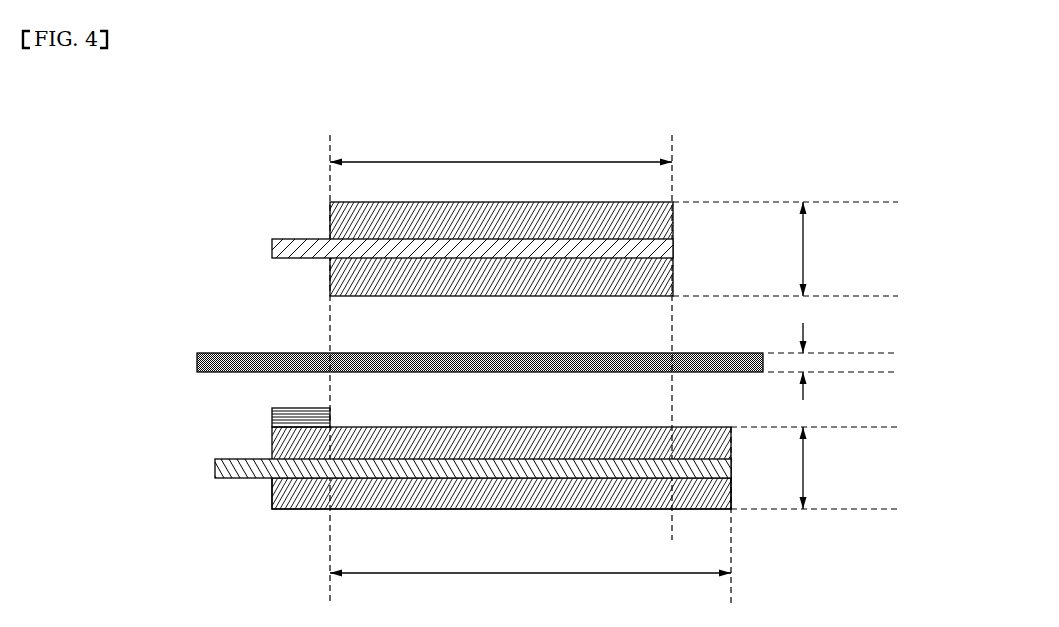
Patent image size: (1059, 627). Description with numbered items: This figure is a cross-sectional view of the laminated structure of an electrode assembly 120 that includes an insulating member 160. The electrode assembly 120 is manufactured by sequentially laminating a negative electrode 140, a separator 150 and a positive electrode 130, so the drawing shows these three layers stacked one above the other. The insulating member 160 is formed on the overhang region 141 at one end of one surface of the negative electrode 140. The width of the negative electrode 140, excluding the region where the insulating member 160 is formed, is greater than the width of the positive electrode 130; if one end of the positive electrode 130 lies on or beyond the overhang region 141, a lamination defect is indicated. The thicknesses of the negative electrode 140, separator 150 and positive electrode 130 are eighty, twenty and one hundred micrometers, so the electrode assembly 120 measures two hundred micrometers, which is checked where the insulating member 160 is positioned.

The electrode assembly 120 is at (172, 133).
The positive electrode 130 is at (256, 252).
The negative electrode 140 is at (438, 507).
The overhang region 141 is at (291, 497).
The separator 150 is at (197, 363).
The insulating member 160 is at (272, 422).